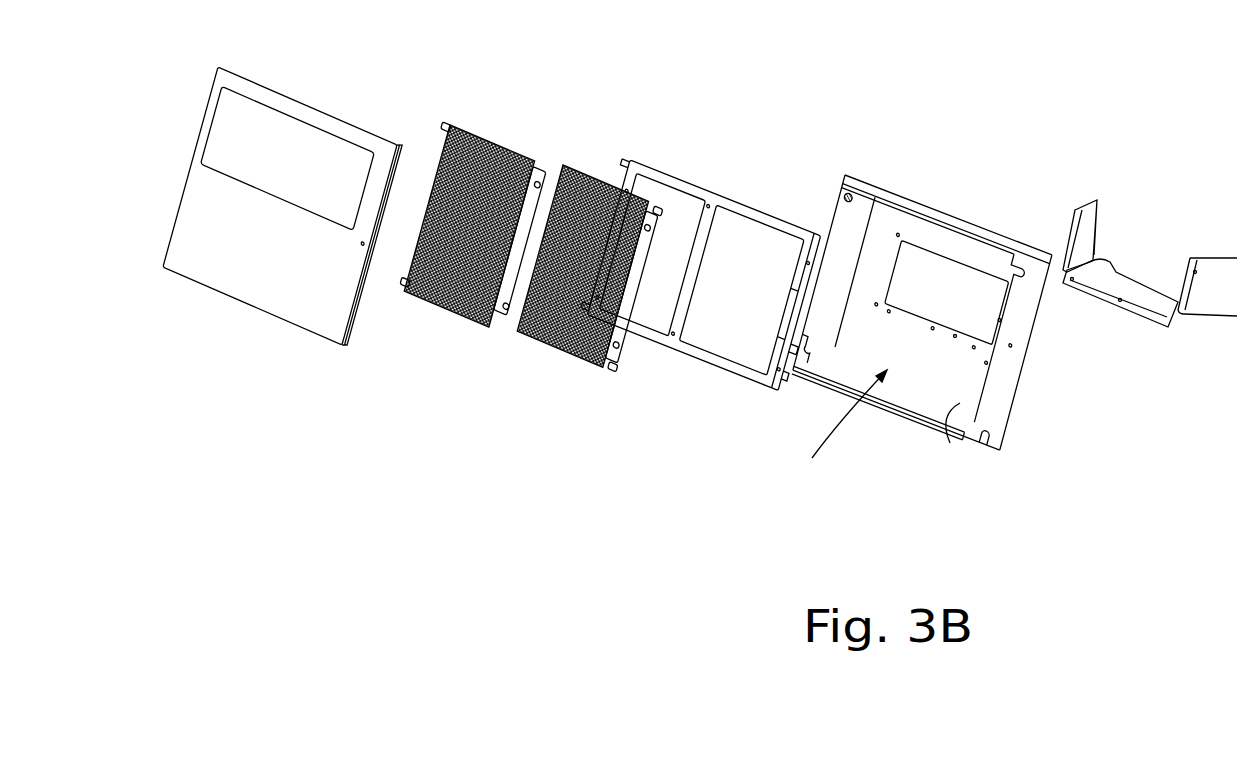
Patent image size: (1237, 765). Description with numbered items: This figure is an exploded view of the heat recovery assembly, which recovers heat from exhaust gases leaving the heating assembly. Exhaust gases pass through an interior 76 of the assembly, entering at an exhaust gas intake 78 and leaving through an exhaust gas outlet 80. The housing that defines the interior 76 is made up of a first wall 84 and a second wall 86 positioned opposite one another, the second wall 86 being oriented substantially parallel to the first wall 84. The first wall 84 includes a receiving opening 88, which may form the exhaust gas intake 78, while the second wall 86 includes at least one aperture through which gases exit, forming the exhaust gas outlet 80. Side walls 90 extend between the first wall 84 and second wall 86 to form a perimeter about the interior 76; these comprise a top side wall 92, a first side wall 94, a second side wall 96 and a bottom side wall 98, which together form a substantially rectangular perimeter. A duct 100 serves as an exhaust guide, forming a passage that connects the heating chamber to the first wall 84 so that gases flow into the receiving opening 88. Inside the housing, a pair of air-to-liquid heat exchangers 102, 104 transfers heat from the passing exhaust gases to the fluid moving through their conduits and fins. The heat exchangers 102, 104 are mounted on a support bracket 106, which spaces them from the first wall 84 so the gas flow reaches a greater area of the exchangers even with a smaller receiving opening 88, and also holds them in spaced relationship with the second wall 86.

The interior 76 is at (839, 443).
The exhaust gas intake 78 is at (953, 333).
The exhaust gas outlet 80 is at (282, 222).
The first wall 84 is at (950, 442).
The second wall 86 is at (282, 107).
The receiving opening 88 is at (947, 293).
The side walls 90 is at (919, 318).
The top side wall 92 is at (947, 221).
The first side wall 94 is at (835, 279).
The second side wall 96 is at (1008, 346).
The bottom side wall 98 is at (878, 403).
The duct 100 is at (1150, 212).
The heat exchanger 102 is at (445, 312).
The heat exchanger 104 is at (547, 353).
The support bracket 106 is at (675, 172).